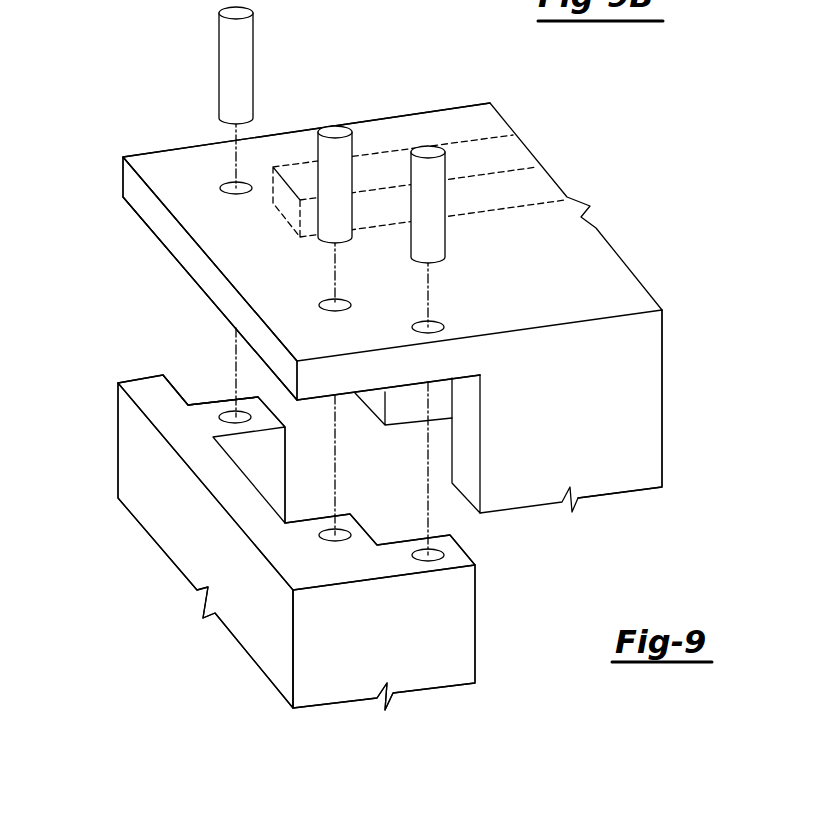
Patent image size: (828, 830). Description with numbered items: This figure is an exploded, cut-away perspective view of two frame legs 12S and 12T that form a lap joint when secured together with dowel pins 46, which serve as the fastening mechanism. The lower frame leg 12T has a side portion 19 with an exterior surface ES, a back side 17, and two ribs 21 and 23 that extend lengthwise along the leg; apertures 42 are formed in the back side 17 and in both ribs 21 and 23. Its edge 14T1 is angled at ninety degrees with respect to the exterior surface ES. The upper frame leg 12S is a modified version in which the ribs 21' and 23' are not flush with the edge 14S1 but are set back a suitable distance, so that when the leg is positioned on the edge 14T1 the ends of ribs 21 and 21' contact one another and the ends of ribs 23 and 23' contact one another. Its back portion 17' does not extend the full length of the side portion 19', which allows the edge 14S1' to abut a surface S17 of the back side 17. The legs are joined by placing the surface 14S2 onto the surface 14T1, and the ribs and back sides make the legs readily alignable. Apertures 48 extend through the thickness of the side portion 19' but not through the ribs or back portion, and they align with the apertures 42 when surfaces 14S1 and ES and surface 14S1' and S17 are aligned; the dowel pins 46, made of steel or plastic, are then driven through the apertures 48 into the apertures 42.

The frame leg 12S is at (565, 144).
The side portion 19' is at (306, 217).
The edge 14S1 is at (195, 245).
The surface 14S2 is at (170, 253).
The rib 23' is at (419, 153).
The rib 21' is at (403, 436).
The edge 14S1' is at (487, 462).
The back portion 17' is at (652, 404).
The apertures 48 is at (437, 330).
The dowel pins 46 is at (233, 60).
The frame leg 12T is at (367, 552).
The edge 14T1 is at (140, 389).
The side portion 19 is at (177, 545).
The exterior surface ES is at (133, 438).
The rib 23 is at (207, 449).
The rib 21 is at (380, 562).
The apertures 42 is at (437, 557).
The back side 17 is at (424, 645).
The surface S17 is at (478, 637).